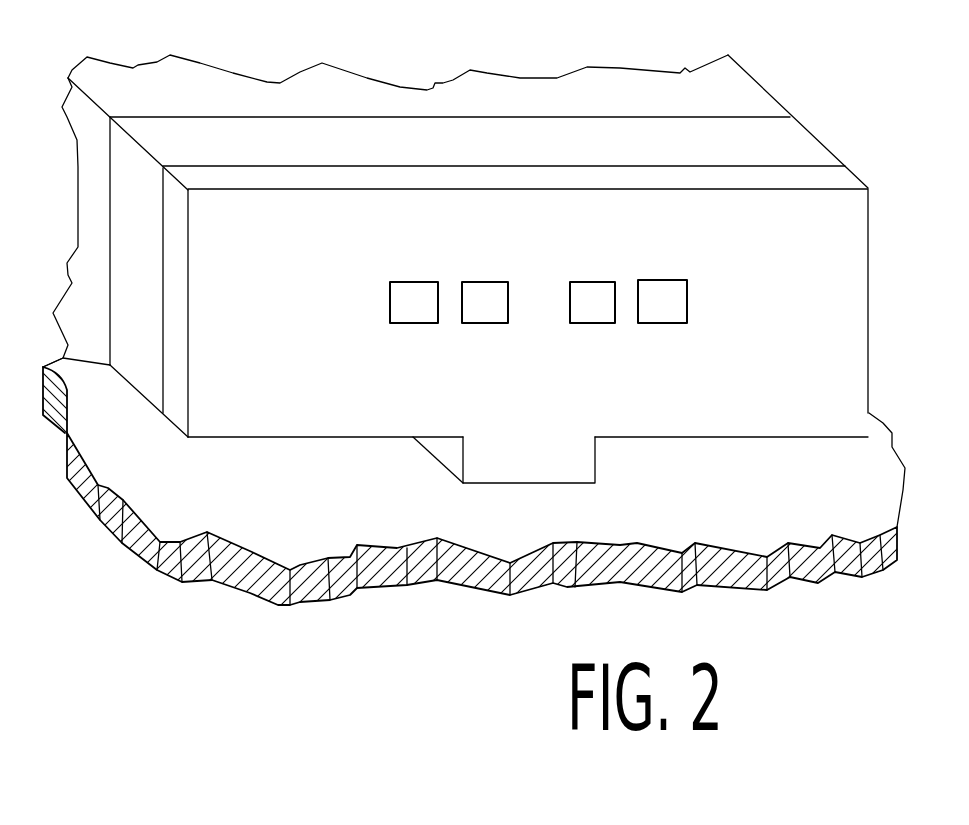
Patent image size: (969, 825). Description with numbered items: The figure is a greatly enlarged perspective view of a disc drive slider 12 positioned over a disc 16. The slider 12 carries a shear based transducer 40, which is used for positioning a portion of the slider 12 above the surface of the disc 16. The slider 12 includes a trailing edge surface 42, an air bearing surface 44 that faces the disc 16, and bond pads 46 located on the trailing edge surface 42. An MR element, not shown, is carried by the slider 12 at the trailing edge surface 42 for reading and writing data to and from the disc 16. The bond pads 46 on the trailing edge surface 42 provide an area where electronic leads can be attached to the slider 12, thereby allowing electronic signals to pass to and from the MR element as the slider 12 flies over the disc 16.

The slider 12 is at (478, 87).
The disc 16 is at (245, 563).
The shear based transducer 40 is at (811, 133).
The trailing edge surface 42 is at (268, 251).
The air bearing surface 44 is at (113, 407).
The bond pads 46 is at (455, 352).